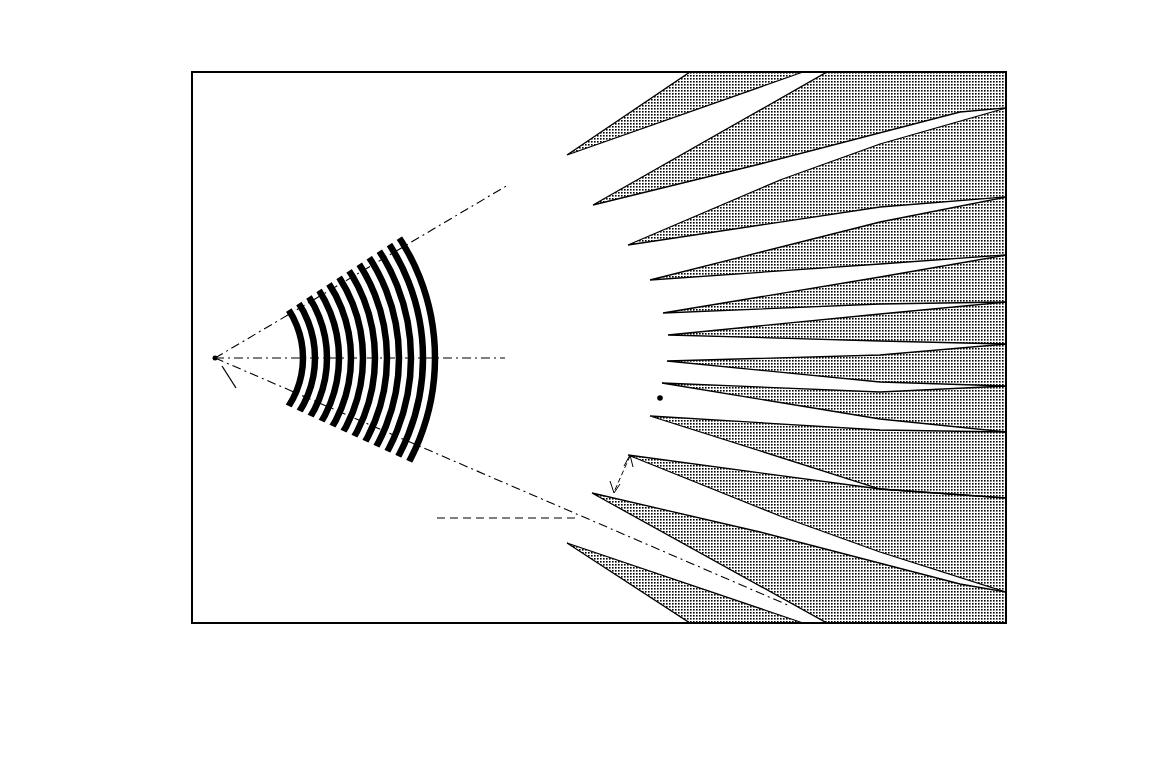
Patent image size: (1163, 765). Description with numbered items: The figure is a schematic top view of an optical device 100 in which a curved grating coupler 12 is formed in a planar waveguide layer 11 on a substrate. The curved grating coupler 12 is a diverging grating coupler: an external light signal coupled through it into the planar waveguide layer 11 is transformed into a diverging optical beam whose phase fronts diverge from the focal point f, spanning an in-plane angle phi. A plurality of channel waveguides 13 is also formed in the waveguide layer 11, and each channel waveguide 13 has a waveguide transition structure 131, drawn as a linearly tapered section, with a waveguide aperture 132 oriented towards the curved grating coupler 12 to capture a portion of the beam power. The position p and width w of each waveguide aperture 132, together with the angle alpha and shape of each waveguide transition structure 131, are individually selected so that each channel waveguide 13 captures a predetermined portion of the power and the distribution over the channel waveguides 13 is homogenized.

The optical device 100 is at (142, 79).
The planar waveguide layer 11 is at (355, 147).
The curved grating coupler 12 is at (302, 279).
The channel waveguides 13 is at (996, 119).
The waveguide transition structure 131 is at (705, 280).
The waveguide aperture 132 is at (622, 228).